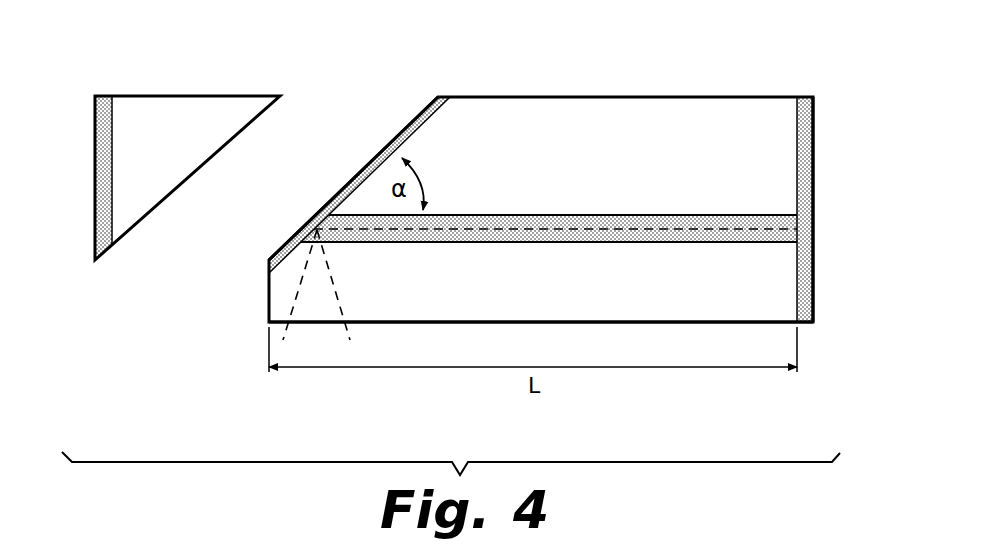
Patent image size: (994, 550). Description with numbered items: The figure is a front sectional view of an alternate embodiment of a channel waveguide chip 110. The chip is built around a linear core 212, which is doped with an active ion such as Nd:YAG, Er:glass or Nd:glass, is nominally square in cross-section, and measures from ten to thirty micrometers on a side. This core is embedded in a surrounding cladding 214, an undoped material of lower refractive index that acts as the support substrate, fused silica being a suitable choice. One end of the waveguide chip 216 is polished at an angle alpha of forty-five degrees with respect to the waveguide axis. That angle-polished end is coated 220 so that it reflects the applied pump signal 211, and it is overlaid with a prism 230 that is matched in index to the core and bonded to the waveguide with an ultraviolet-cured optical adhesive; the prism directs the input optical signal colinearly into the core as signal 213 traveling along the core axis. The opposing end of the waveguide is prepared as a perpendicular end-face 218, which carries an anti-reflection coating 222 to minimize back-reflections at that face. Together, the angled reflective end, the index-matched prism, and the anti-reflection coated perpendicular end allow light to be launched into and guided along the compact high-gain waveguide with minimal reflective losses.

The waveguide chip 110 is at (614, 86).
The pump signal 211 is at (325, 286).
The linear core 212 is at (603, 216).
The signal 213 is at (695, 229).
The cladding 214 is at (541, 294).
The end of the waveguide chip 216 is at (430, 119).
The perpendicular end-face 218 is at (797, 122).
The coating 220 is at (405, 128).
The anti-reflection coating 222 is at (813, 137).
The prism 230 is at (187, 178).